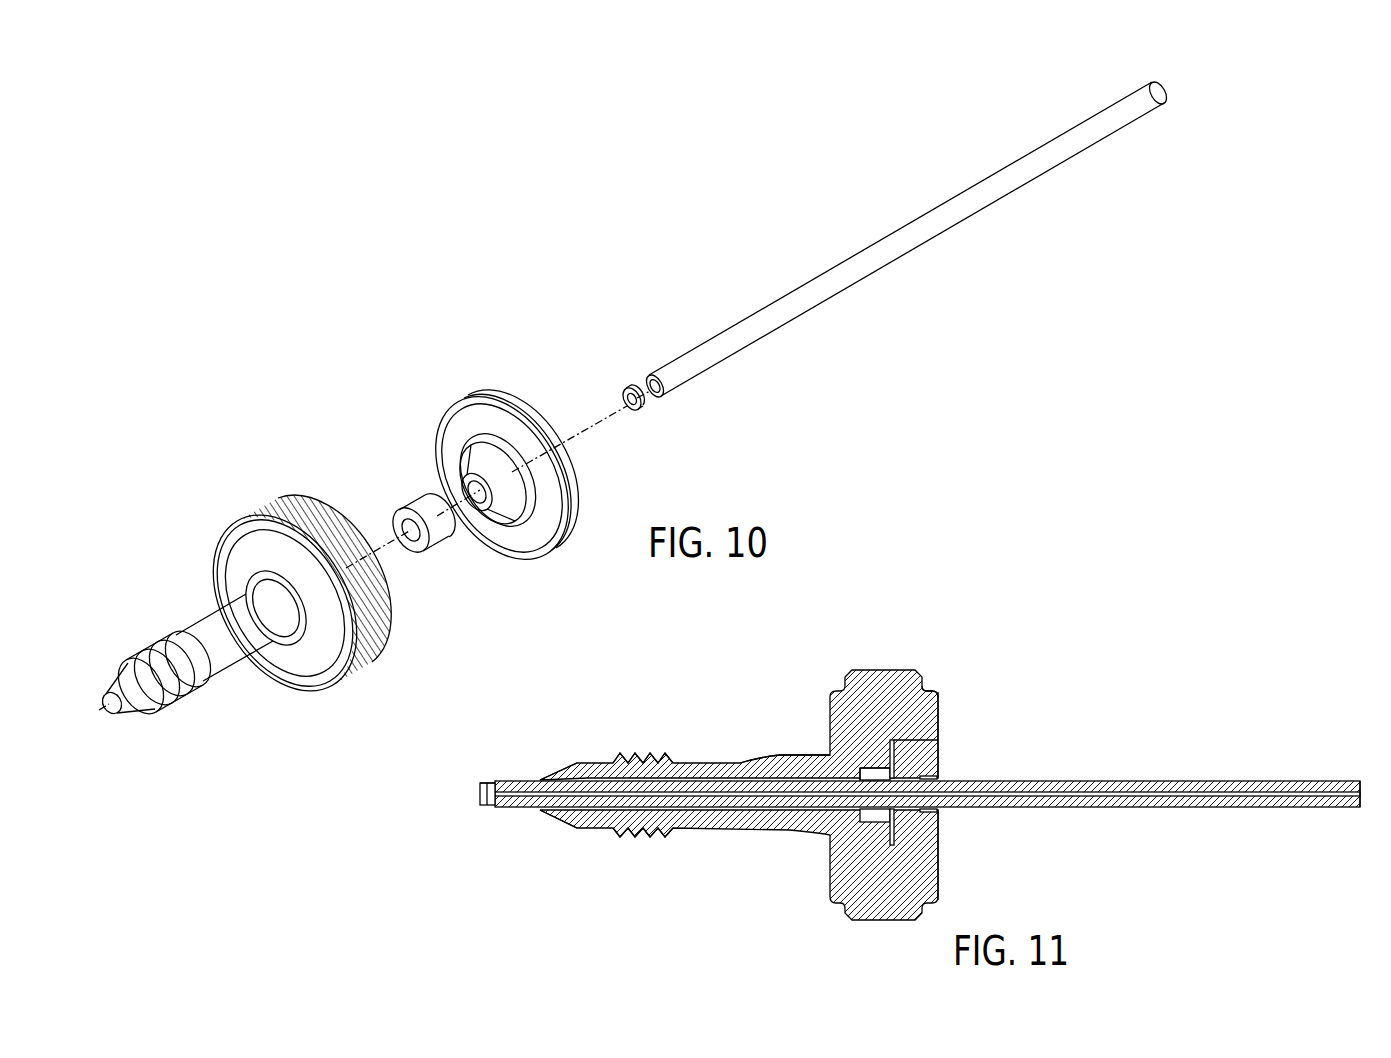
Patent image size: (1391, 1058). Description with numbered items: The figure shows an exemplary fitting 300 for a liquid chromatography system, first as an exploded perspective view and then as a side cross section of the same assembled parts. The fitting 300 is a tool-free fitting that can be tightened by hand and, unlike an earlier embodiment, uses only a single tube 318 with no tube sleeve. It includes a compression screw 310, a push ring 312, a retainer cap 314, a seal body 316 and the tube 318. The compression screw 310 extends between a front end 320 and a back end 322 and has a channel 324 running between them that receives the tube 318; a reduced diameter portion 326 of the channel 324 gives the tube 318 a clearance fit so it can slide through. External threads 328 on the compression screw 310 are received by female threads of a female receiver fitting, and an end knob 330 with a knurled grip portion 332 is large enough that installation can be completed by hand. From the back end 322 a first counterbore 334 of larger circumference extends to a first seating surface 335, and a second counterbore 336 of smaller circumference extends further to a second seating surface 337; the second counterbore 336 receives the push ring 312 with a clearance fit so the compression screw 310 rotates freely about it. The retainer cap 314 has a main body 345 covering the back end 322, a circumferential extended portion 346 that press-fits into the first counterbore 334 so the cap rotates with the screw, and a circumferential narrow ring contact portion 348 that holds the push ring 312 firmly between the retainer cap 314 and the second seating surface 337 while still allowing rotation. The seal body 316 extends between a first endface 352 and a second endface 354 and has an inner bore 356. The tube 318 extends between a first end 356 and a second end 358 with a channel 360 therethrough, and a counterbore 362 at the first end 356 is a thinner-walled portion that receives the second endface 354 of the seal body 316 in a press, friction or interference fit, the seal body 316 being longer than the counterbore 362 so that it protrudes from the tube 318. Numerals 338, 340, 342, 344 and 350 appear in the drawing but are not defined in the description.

In FIG. 10, the fitting 300 is at (788, 112).
In FIG. 11, the fitting 300 is at (1072, 628).
In FIG. 10, the compression screw 310 is at (215, 612).
In FIG. 11, the compression screw 310 is at (739, 795).
In FIG. 10, the push ring 312 is at (412, 465).
In FIG. 11, the push ring 312 is at (872, 822).
In FIG. 10, the retainer cap 314 is at (521, 450).
In FIG. 11, the retainer cap 314 is at (906, 771).
In FIG. 10, the seal body 316 is at (657, 348).
In FIG. 11, the seal body 316 is at (465, 793).
In FIG. 10, the tube 318 is at (954, 243).
In FIG. 11, the tube 318 is at (927, 790).
In FIG. 10, the front end 320 is at (107, 698).
In FIG. 10, the back end 322 is at (330, 542).
In FIG. 10, the channel 324 is at (114, 712).
In FIG. 11, the reduced diameter portion 326 is at (570, 770).
In FIG. 10, the external threads 328 is at (165, 638).
In FIG. 11, the external threads 328 is at (620, 752).
In FIG. 10, the end knob 330 is at (238, 522).
In FIG. 10, the knurled grip portion 332 is at (297, 490).
In FIG. 11, the first counterbore 334 is at (905, 742).
In FIG. 11, the first seating surface 335 is at (880, 750).
In FIG. 11, the second counterbore 336 is at (865, 770).
In FIG. 11, the second seating surface 337 is at (855, 775).
In FIG. 10, the bearing bore 338 is at (396, 527).
In FIG. 10, the bearing outer ring 340 is at (420, 505).
In FIG. 10, the bearing side 342 is at (430, 540).
In FIG. 10, the disc rim 344 is at (516, 425).
In FIG. 11, the main body 345 is at (930, 685).
In FIG. 10, the circumferential extended portion 346 is at (540, 490).
In FIG. 11, the circumferential extended portion 346 is at (900, 740).
In FIG. 10, the circumferential narrow ring contact portion 348 is at (545, 548).
In FIG. 11, the circumferential narrow ring contact portion 348 is at (905, 770).
In FIG. 10, the hub hole 350 is at (484, 486).
In FIG. 10, the first endface 352 is at (636, 410).
In FIG. 10, the second endface 354 is at (636, 388).
In FIG. 10, the inner bore 356 is at (668, 395).
In FIG. 11, the inner bore 356 is at (490, 806).
In FIG. 10, the second end 358 is at (1166, 93).
In FIG. 11, the channel 360 is at (1340, 808).
In FIG. 11, the counterbore 362 is at (490, 782).